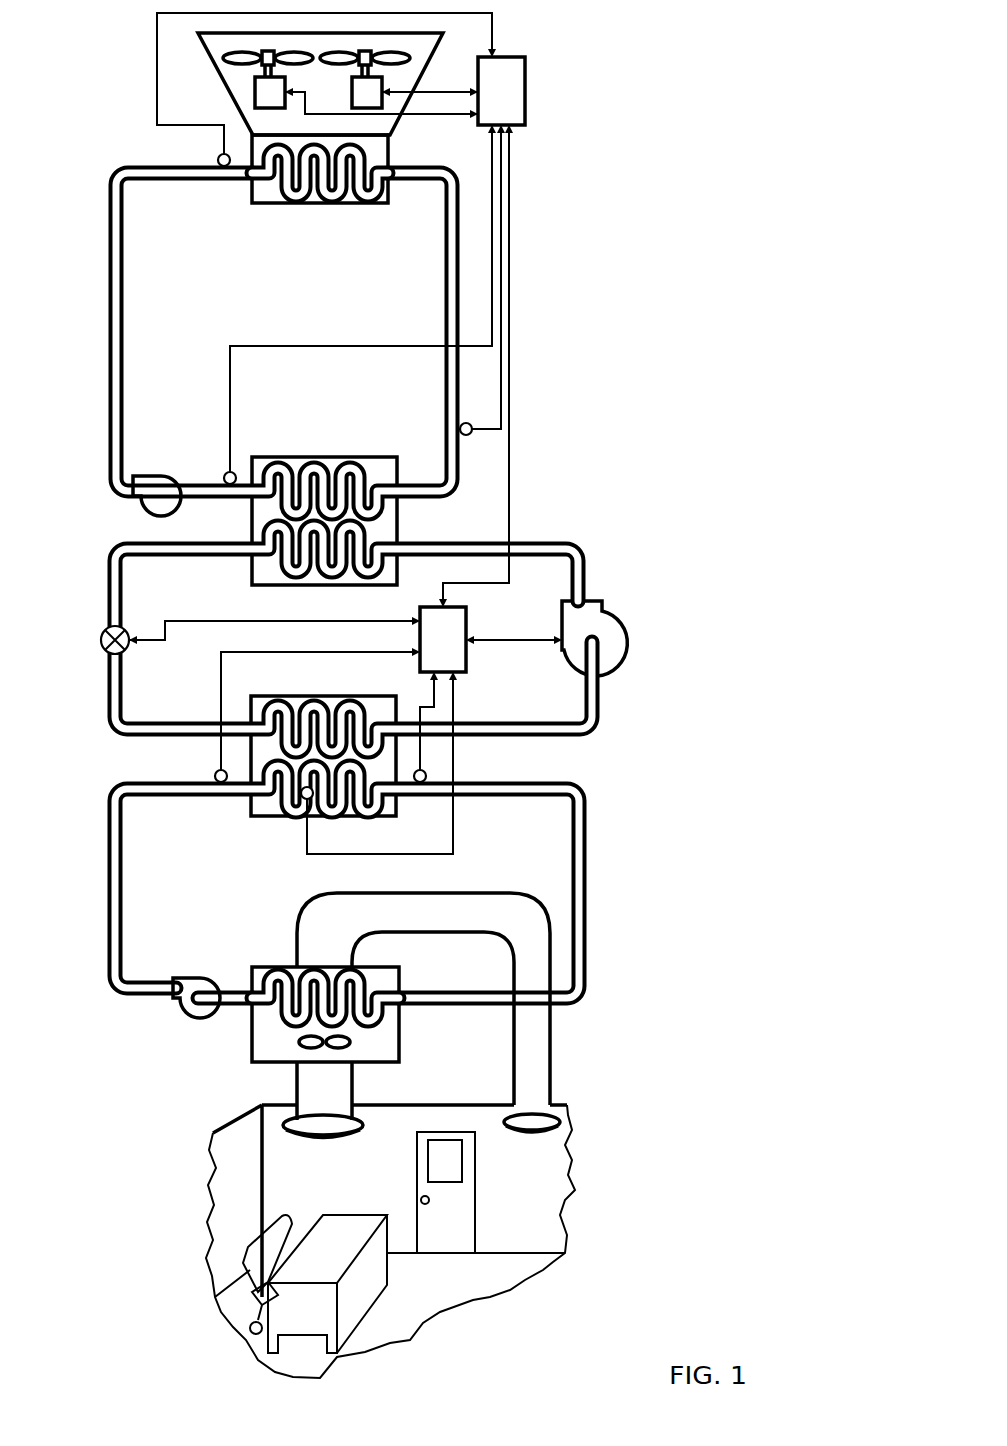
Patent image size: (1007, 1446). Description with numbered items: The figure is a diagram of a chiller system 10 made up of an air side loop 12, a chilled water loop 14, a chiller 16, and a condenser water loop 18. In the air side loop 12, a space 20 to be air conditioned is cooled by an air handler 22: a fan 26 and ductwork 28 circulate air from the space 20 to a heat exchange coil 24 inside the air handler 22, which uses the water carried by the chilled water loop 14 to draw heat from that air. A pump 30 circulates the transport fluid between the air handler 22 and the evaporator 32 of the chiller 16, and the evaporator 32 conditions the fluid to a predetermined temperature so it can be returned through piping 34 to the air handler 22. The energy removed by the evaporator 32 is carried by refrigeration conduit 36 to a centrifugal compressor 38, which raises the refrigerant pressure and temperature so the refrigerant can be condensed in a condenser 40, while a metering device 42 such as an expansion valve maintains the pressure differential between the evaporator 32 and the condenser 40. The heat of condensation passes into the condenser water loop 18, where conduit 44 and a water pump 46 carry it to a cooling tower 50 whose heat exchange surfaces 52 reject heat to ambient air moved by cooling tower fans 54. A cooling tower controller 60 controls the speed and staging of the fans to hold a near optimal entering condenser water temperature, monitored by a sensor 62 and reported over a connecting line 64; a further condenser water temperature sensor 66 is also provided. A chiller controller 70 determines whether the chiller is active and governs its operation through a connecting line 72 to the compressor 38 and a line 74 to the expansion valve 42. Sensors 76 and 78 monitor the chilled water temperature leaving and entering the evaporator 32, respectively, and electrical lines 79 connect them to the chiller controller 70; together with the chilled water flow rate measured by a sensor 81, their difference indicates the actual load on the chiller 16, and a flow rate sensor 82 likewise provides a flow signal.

The chiller system 10 is at (10, 270).
The air side loop 12 is at (643, 1122).
The chilled water loop 14 is at (643, 902).
The chiller 16 is at (713, 655).
The condenser water loop 18 is at (606, 321).
The space 20 is at (577, 1198).
The air handler 22 is at (252, 1030).
The heat exchange coil 24 is at (293, 985).
The fan 26 is at (328, 1048).
The ductwork 28 is at (552, 1030).
The pump 30 is at (182, 1012).
The evaporator 32 is at (340, 696).
The piping 34 is at (587, 820).
The refrigeration conduit 36 is at (586, 578).
The centrifugal compressor 38 is at (562, 664).
The condenser 40 is at (326, 457).
The metering device 42 is at (101, 641).
The conduit 44 is at (108, 405).
The water pump 46 is at (153, 476).
The cooling tower 50 is at (262, 206).
The heat exchange surfaces 52 is at (322, 188).
The cooling tower fans 54 is at (366, 70).
The cooling tower controller 60 is at (488, 106).
The sensor 62 is at (459, 429).
The connecting line 64 is at (490, 166).
The condenser water temperature sensor 66 is at (227, 472).
The chiller controller 70 is at (430, 654).
The connecting line 72 is at (497, 639).
The line 74 is at (222, 619).
The sensor 76 is at (421, 783).
The sensor 78 is at (216, 771).
The electrical lines 79 is at (420, 700).
The sensor 81 is at (304, 800).
The flow rate sensor 82 is at (218, 157).